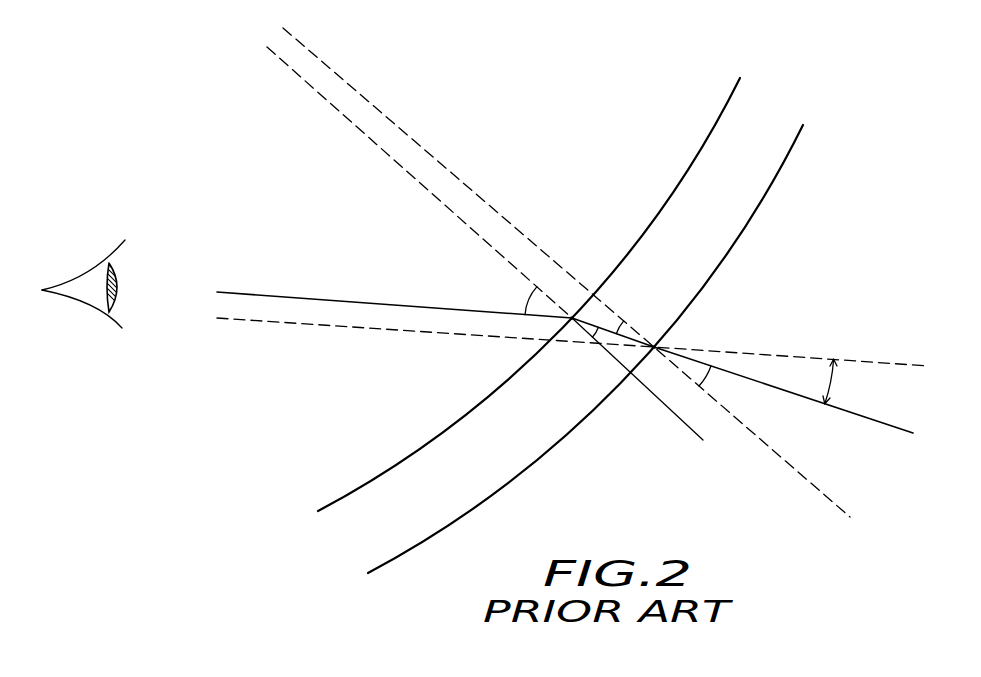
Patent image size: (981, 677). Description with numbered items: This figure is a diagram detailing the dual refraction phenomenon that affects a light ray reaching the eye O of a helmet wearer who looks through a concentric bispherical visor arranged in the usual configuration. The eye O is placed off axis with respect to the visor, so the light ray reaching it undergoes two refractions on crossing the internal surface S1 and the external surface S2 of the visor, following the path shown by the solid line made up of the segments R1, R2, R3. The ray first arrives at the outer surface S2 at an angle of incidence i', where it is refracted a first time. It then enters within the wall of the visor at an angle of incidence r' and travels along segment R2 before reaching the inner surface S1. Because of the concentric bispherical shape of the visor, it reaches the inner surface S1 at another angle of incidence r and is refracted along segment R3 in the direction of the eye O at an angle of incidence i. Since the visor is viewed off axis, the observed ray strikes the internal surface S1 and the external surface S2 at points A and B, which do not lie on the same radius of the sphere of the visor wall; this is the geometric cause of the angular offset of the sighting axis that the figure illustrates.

The eye O is at (87, 272).
The internal surface S1 is at (722, 112).
The external surface S2 is at (773, 178).
The light ray path segment R3 is at (290, 296).
The light ray path segment R2 is at (647, 340).
The light ray path segment R1 is at (880, 424).
The point A is at (572, 313).
The point B is at (667, 347).
The angle of incidence i is at (501, 292).
The angle of incidence i' is at (733, 427).
The angle of incidence r is at (586, 362).
The angle of incidence r' is at (633, 294).